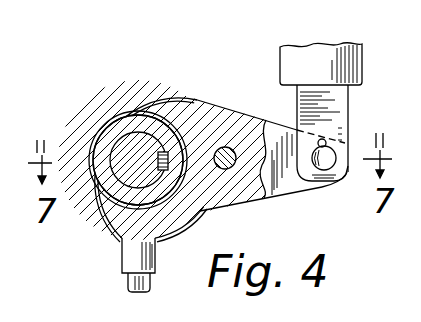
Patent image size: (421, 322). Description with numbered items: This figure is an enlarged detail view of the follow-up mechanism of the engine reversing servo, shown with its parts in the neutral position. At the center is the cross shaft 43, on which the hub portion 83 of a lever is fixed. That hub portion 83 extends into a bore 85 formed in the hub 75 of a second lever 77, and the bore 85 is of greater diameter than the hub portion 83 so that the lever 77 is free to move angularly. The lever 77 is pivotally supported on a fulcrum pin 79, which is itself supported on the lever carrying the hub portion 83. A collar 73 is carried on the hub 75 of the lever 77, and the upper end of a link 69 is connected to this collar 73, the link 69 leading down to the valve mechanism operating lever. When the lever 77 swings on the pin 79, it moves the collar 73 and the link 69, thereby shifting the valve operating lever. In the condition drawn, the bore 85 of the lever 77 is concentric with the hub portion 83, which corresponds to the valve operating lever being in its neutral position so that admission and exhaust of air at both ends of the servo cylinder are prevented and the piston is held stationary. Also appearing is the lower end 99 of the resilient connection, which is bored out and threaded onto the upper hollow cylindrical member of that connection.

The hub 75 is at (129, 91).
The bore 85 is at (110, 115).
The cross shaft 43 is at (117, 152).
The fulcrum pin 79 is at (225, 146).
The lower end of the resilient connection 99 is at (330, 102).
The lever 77 is at (293, 178).
The hub portion 83 is at (173, 193).
The collar 73 is at (166, 233).
The link 69 is at (128, 284).